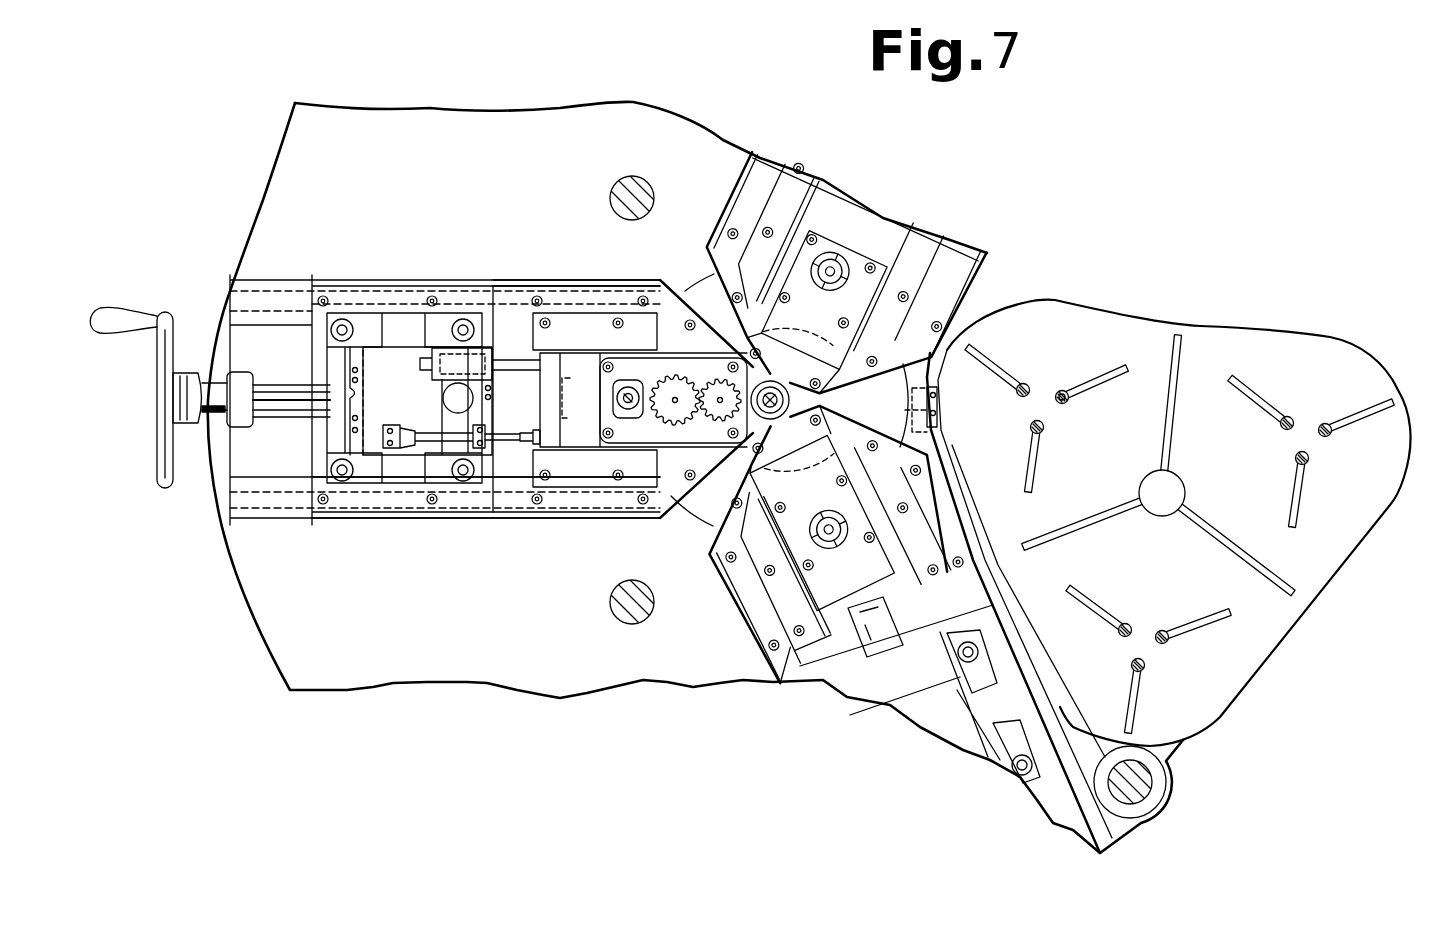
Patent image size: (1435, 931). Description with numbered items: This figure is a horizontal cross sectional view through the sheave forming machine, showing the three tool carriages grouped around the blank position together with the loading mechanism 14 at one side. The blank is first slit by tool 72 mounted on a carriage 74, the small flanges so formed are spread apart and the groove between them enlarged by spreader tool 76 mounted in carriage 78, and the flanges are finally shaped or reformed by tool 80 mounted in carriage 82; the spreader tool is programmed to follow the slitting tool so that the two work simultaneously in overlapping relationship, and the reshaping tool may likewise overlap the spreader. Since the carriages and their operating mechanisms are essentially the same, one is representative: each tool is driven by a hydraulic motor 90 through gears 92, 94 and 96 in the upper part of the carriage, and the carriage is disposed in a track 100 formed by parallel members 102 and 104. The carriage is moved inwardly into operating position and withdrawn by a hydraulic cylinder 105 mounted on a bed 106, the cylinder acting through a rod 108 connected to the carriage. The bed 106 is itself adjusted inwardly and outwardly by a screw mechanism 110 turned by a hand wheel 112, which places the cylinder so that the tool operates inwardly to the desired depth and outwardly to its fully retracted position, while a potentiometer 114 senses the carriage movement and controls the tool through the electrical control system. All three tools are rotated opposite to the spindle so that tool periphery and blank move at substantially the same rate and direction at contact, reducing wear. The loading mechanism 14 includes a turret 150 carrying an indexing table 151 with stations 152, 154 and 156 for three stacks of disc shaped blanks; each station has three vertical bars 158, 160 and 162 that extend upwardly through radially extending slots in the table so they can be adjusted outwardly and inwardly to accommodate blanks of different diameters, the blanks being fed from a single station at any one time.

The loading mechanism 14 is at (1215, 312).
The slitting tool 72 is at (824, 475).
The carriage 74 is at (736, 627).
The spreader tool 76 is at (705, 432).
The carriage 78 is at (630, 281).
The reshaping tool 80 is at (840, 346).
The carriage 82 is at (930, 247).
The hydraulic motor 90 is at (836, 258).
The gear 92 is at (647, 415).
The gear 94 is at (672, 380).
The gear 96 is at (728, 375).
The track 100 is at (502, 280).
The parallel member 102 is at (550, 282).
The parallel member 104 is at (509, 520).
The hydraulic cylinder 105 is at (407, 391).
The bed 106 is at (380, 352).
The rod 108 is at (511, 423).
The screw mechanism 110 is at (283, 408).
The hand wheel 112 is at (160, 453).
The potentiometer 114 is at (424, 434).
The turret 150 is at (1273, 647).
The indexing table 151 is at (1203, 707).
The station 152 is at (1057, 377).
The station 154 is at (1155, 622).
The station 156 is at (1305, 413).
The vertical bar 158 is at (1017, 403).
The vertical bar 160 is at (1043, 430).
The vertical bar 162 is at (1067, 400).